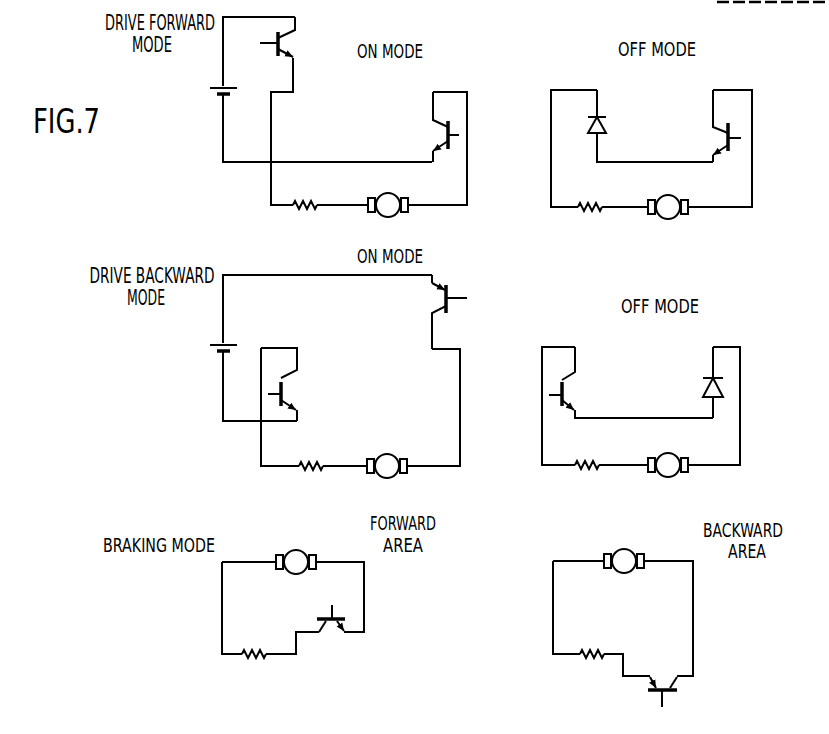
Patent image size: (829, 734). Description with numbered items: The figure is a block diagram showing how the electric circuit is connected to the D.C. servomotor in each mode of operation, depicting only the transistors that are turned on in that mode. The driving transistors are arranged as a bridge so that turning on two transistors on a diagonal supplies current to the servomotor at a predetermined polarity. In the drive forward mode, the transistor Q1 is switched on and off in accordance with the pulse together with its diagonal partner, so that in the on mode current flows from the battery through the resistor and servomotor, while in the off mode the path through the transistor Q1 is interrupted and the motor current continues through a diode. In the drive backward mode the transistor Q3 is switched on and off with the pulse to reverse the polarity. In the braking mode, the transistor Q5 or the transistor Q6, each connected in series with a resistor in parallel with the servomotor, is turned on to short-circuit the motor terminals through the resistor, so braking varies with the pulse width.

The transistor Q1 is at (286, 37).
The transistor Q3 is at (436, 312).
The transistor Q5 is at (331, 631).
The transistor Q6 is at (662, 678).